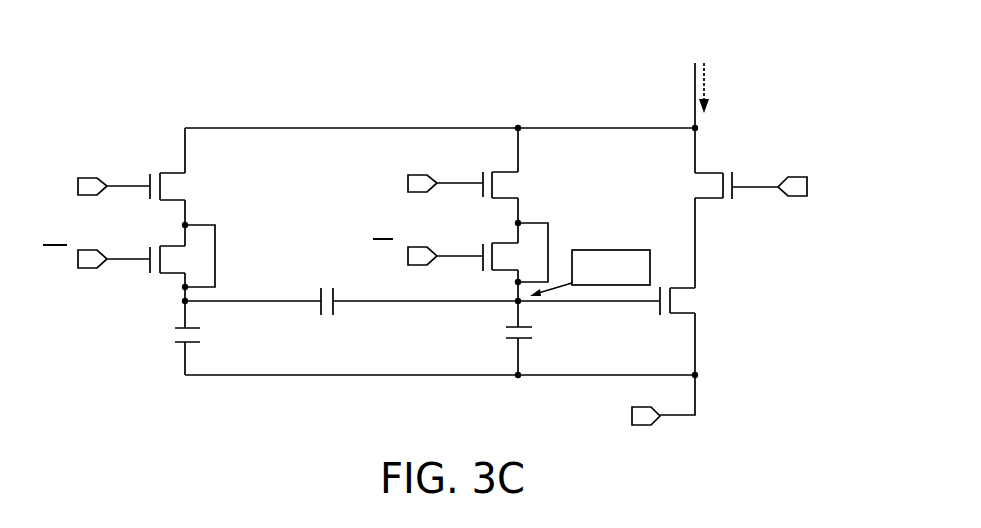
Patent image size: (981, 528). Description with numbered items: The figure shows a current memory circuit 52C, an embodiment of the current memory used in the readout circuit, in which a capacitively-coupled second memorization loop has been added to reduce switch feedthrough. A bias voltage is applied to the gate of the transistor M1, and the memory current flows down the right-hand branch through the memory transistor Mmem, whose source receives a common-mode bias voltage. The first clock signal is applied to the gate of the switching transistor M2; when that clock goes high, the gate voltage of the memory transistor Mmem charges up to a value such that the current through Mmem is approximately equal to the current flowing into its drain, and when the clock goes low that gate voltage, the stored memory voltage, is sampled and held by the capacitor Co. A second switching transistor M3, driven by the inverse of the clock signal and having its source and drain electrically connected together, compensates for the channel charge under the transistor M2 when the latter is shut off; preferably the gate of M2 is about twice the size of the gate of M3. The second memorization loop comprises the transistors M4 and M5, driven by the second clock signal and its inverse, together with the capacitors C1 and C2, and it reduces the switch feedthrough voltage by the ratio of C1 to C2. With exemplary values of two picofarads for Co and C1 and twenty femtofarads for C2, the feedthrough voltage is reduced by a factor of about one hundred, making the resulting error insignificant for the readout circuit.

The memory circuit 52C is at (259, 98).
The transistor M1 is at (695, 190).
The transistor M2 is at (521, 190).
The second switching transistor M3 is at (511, 261).
The transistor M4 is at (187, 190).
The transistor M5 is at (177, 264).
The memory transistor Mmem is at (717, 302).
The capacitor C1 is at (208, 333).
The capacitor C2 is at (323, 315).
The capacitor Co is at (505, 332).